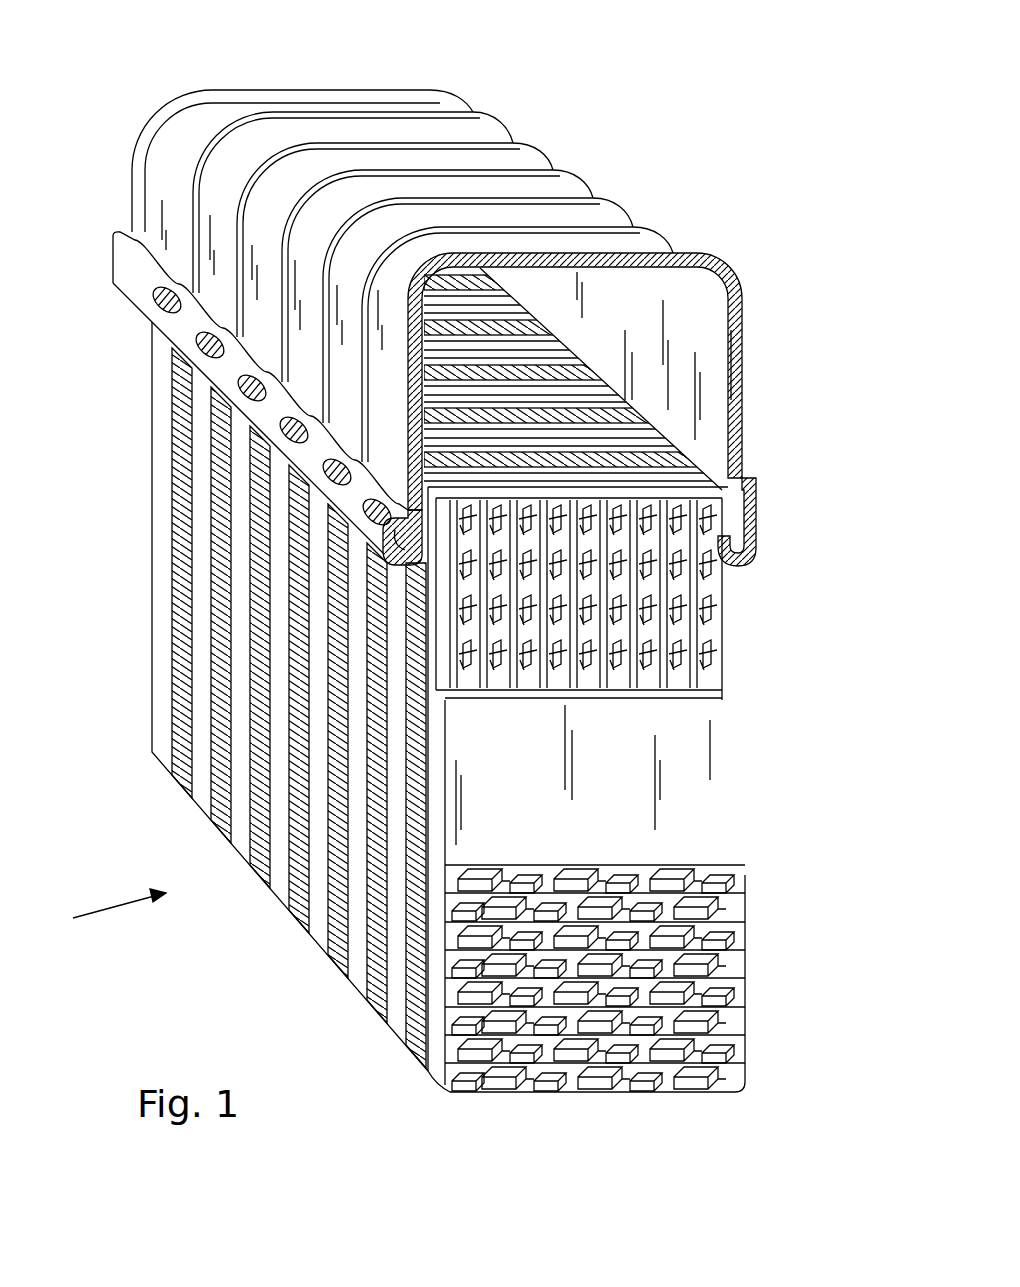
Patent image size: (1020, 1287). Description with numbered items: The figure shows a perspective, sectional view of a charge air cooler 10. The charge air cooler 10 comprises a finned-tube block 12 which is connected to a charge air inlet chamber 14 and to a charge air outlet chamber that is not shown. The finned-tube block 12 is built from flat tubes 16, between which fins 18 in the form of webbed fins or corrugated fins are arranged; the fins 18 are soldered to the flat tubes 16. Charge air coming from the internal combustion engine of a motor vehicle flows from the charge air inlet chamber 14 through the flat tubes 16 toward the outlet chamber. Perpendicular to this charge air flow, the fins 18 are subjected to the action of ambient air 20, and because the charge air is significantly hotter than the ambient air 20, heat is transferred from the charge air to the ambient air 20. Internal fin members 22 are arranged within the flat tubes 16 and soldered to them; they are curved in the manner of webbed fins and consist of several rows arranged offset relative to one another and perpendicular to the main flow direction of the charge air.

The charge air cooler 10 is at (670, 82).
The finned-tube block 12 is at (150, 632).
The charge air inlet chamber 14 is at (735, 352).
The flat tubes 16 is at (665, 478).
The fins 18 is at (258, 785).
The ambient air 20 is at (107, 910).
The internal fin members 22 is at (720, 558).